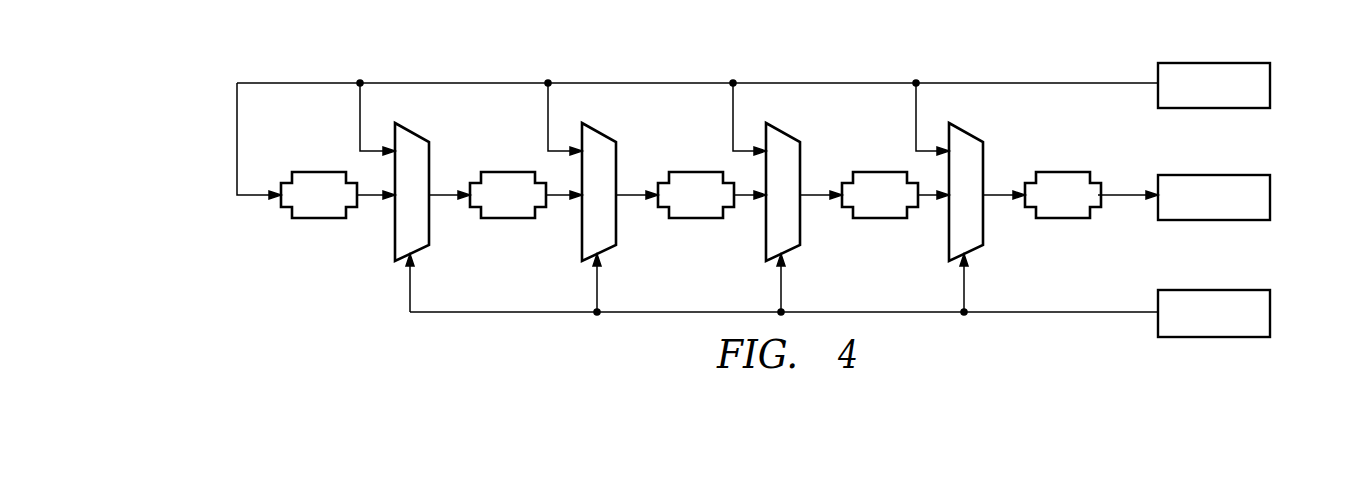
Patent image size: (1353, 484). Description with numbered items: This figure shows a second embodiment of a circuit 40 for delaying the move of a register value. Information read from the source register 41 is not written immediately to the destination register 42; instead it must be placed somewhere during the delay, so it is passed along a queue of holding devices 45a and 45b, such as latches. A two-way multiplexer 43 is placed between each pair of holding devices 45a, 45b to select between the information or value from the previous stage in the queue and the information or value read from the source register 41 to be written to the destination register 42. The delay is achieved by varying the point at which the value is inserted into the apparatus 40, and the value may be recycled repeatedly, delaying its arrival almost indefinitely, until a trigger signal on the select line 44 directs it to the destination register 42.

The circuit 40 is at (188, 84).
The source register 41 is at (1272, 86).
The destination register 42 is at (1272, 197).
The two-way multiplexer 43 is at (429, 160).
The select line 44 is at (1272, 312).
The holding device 45a is at (310, 219).
The holding device 45b is at (506, 219).